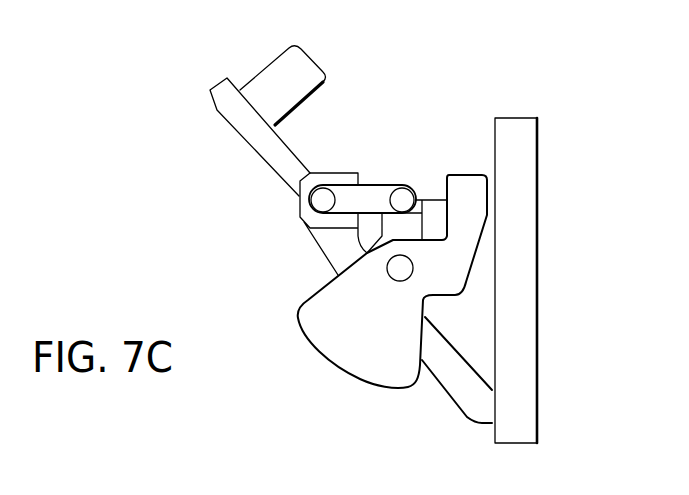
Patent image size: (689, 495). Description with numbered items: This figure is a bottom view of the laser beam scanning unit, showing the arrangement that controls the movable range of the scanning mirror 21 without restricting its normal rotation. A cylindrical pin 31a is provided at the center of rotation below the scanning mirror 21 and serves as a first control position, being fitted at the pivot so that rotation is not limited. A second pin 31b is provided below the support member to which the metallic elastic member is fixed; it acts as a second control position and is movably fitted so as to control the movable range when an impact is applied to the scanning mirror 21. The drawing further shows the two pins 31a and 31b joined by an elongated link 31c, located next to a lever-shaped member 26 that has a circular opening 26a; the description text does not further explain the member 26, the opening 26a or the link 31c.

The scanning mirror 21 is at (528, 231).
The lever arm 26 is at (300, 310).
The hole of lever arm 26a is at (399, 272).
The cylindrical pin 31a is at (404, 195).
The pin 31b is at (320, 200).
The link member 31c is at (370, 192).